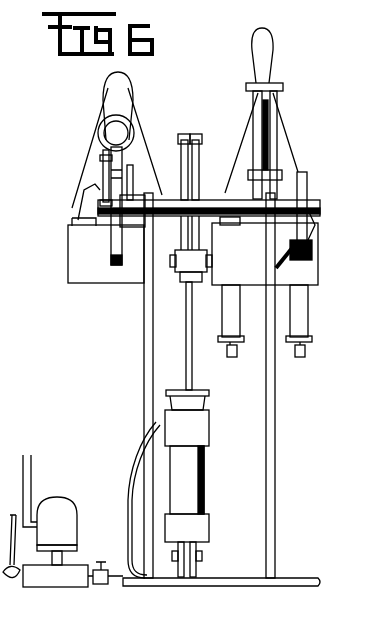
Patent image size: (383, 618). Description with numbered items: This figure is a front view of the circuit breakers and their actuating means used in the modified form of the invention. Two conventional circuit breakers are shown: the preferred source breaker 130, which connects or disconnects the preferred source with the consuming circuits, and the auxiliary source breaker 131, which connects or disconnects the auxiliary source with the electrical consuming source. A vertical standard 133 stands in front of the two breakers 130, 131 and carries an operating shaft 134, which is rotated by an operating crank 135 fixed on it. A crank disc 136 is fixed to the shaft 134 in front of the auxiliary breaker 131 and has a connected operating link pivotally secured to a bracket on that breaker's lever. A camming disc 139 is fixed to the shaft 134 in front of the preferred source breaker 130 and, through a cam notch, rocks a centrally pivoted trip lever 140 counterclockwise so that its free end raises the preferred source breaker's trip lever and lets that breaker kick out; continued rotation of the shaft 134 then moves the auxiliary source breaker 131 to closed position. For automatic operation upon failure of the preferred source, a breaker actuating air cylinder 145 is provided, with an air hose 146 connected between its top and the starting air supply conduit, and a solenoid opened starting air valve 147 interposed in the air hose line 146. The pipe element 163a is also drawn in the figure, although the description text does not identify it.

The right housing 130 is at (300, 278).
The left housing 131 is at (78, 270).
The frame posts 133 is at (146, 378).
The guide rod 134 is at (168, 203).
The guide rod 135 is at (199, 160).
The plunger rod 136 is at (112, 243).
The support post 139 is at (307, 188).
The latch 140 is at (316, 224).
The air cylinder 145 is at (205, 485).
The air hose 146 is at (130, 463).
The valve body 147 is at (70, 574).
The supply pipe 163a is at (32, 480).